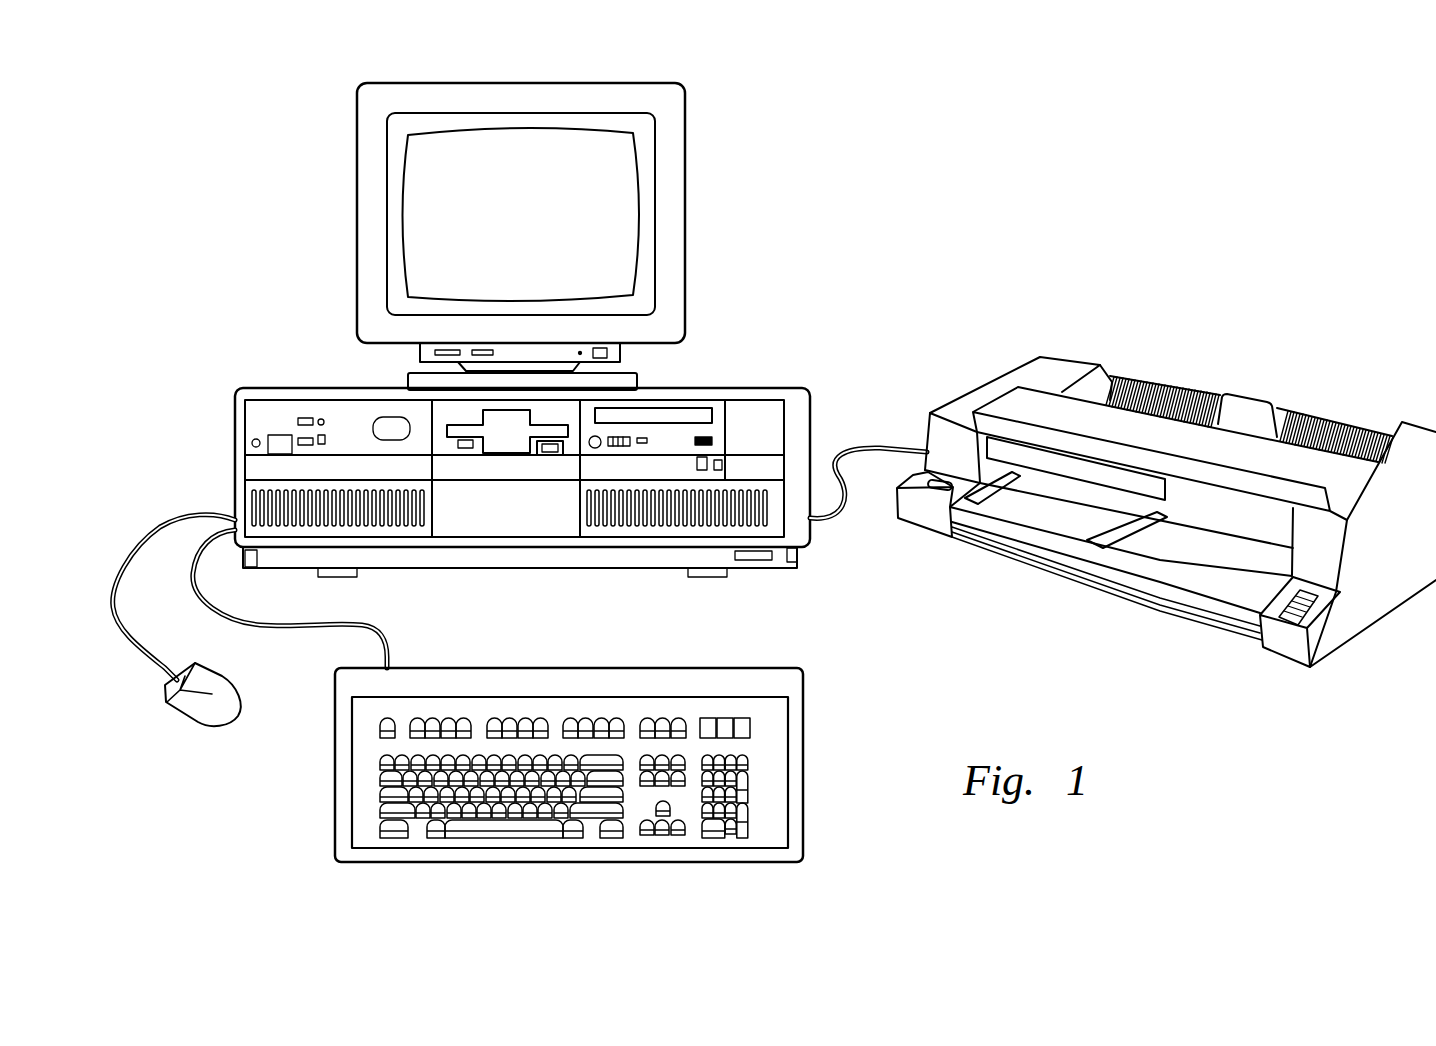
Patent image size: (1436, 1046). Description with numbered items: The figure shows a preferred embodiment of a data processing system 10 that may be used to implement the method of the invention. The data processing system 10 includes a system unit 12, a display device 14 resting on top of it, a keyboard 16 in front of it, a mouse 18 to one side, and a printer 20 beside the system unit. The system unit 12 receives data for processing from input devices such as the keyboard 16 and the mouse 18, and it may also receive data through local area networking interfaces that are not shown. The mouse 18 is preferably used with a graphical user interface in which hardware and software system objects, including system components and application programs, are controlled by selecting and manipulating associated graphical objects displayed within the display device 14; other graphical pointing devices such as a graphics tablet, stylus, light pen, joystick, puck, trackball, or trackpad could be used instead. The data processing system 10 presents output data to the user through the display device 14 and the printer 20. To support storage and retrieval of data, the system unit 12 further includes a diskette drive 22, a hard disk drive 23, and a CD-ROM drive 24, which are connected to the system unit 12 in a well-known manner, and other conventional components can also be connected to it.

The data processing system 10 is at (884, 132).
The system unit 12 is at (779, 378).
The display device 14 is at (693, 232).
The keyboard 16 is at (645, 661).
The mouse 18 is at (193, 708).
The printer 20 is at (954, 379).
The diskette drive 22 is at (503, 447).
The hard disk drive 23 is at (658, 468).
The CD-ROM drive 24 is at (673, 415).